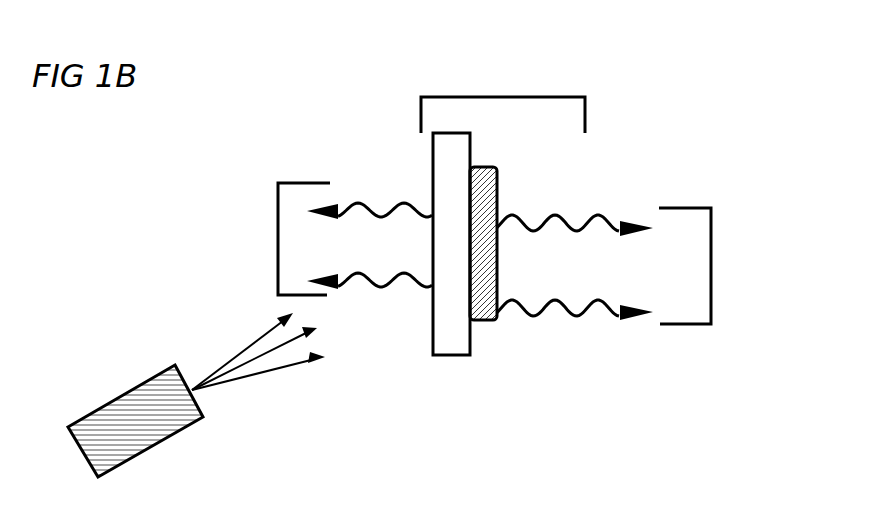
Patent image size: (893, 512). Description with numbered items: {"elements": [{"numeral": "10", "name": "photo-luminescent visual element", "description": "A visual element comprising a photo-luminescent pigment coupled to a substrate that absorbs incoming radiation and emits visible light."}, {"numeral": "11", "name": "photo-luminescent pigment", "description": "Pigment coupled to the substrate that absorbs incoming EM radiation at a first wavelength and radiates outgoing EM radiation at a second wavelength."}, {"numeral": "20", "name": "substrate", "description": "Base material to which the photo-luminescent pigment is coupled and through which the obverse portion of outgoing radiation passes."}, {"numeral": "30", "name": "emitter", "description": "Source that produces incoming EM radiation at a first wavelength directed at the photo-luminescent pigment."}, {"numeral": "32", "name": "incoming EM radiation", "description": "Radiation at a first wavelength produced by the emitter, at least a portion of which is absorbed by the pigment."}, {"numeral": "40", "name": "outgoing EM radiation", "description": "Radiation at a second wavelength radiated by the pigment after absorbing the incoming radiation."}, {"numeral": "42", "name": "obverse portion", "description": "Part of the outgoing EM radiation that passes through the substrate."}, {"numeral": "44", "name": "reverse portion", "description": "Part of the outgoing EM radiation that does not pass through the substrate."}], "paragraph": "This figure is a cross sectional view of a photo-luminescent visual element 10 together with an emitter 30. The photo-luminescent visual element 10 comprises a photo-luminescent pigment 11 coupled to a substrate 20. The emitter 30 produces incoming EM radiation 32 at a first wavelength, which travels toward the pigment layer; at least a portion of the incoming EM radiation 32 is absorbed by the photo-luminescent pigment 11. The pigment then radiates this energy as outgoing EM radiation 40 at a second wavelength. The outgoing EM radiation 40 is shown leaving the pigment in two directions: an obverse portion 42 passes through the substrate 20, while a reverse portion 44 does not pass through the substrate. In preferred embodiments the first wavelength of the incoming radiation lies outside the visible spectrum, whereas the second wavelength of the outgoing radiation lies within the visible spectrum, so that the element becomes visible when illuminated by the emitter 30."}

The optical assembly 10 is at (503, 97).
The coating layer 11 is at (482, 320).
The substrate 20 is at (451, 357).
The light source 30 is at (140, 382).
The incident light rays 32 is at (238, 375).
The emitted light 40 is at (398, 203).
The first side region 42 is at (278, 241).
The second side region 44 is at (711, 243).